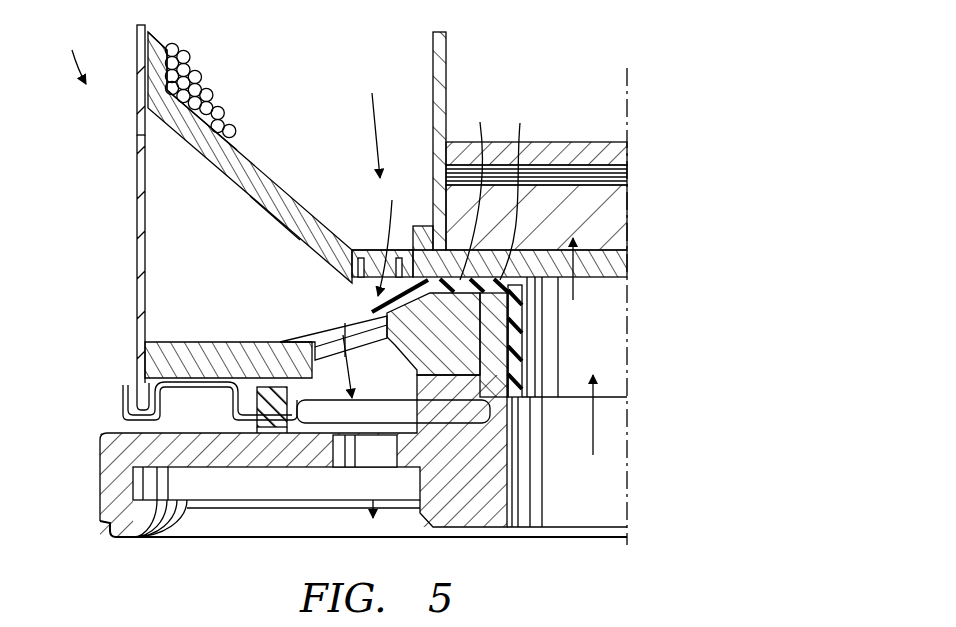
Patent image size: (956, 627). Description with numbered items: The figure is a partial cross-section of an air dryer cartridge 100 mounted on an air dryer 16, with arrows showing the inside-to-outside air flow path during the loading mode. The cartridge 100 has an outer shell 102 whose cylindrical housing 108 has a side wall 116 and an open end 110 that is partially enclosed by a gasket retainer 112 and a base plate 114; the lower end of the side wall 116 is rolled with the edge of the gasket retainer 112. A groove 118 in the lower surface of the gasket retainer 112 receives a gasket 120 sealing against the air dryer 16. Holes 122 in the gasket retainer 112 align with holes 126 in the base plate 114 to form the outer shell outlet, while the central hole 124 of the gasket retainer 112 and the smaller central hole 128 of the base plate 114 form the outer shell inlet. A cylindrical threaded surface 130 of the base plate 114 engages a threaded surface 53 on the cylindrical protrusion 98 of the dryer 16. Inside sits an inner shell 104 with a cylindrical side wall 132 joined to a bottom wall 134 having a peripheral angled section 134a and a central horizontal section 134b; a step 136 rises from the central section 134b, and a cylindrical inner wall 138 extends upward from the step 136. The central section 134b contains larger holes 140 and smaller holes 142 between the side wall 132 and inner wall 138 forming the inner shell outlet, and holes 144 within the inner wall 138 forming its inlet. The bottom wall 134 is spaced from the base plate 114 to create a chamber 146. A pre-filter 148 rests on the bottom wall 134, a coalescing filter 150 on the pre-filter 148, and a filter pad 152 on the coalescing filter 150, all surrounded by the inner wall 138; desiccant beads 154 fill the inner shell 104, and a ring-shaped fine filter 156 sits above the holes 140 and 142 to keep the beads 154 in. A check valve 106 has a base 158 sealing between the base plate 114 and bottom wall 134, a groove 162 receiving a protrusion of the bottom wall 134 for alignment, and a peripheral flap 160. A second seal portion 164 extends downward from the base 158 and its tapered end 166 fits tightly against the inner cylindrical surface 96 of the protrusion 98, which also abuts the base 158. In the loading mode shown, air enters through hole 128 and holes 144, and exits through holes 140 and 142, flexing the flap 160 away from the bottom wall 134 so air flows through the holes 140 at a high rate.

The cartridge 100 is at (64, 57).
The side wall 116 is at (141, 62).
The cylindrical housing 108 is at (137, 185).
The outer shell 102 is at (137, 230).
The chamber 146 is at (170, 253).
The inner shell 104 is at (160, 33).
The cylindrical side wall 132 is at (164, 58).
The desiccant beads 154 is at (204, 88).
The bottom wall 134 is at (189, 134).
The peripheral angled section 134a is at (283, 198).
The central horizontal section 134b is at (627, 268).
The cylindrical inner wall 138 is at (437, 66).
The filter pad 152 is at (573, 147).
The coalescing filter 150 is at (627, 172).
The pre-filter 148 is at (613, 208).
The base 158 is at (478, 190).
The groove 162 is at (519, 192).
The step 136 is at (415, 228).
The holes 140 is at (378, 235).
The fine filter 156 is at (362, 222).
The holes 142 is at (357, 243).
The holes 144 is at (610, 277).
The check valve 106 is at (525, 318).
The flap 160 is at (373, 311).
The cylindrical threaded surface 130 is at (513, 400).
The second seal portion 164 is at (525, 343).
The central hole 128 is at (523, 357).
The tapered end 166 is at (523, 383).
The threaded surface 53 is at (513, 417).
The cylindrical protrusion 98 is at (513, 447).
The inner cylindrical surface 96 is at (510, 487).
The base plate 114 is at (163, 340).
The holes 122 is at (327, 338).
The holes 126 is at (332, 332).
The gasket 120 is at (249, 340).
The groove 118 is at (237, 380).
The central hole 124 is at (393, 487).
The gasket retainer 112 is at (124, 416).
The open end 110 is at (136, 386).
The air dryer 16 is at (476, 503).